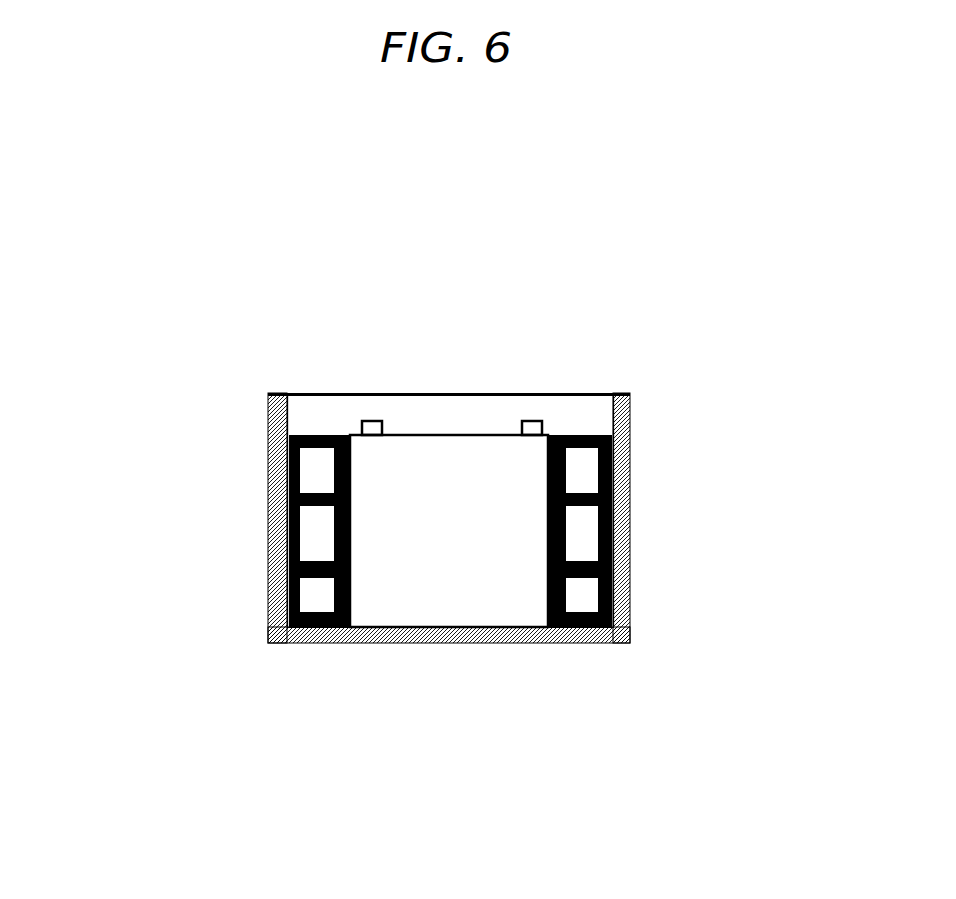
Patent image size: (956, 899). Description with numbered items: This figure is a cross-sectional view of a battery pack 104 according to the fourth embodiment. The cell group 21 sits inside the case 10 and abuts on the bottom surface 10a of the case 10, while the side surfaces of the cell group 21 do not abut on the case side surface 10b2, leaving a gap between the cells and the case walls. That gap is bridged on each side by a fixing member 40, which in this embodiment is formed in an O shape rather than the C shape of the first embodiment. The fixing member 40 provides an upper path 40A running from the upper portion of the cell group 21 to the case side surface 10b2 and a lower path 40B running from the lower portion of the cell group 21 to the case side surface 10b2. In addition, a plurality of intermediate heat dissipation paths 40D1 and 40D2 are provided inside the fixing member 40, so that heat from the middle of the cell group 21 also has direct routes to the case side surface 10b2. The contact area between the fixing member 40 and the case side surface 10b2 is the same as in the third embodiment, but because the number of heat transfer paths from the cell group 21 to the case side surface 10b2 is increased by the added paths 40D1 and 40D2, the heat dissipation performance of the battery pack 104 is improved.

The battery pack 104 is at (190, 197).
The case 10 is at (268, 423).
The bottom surface of the case 10a is at (490, 643).
The case side surface 10b2 is at (265, 548).
The cell group 21 is at (527, 465).
The fixing member 40 is at (632, 474).
The upper path 40A is at (630, 412).
The lower path 40B is at (605, 643).
The intermediate heat dissipation path 40D1 is at (632, 507).
The intermediate heat dissipation path 40D2 is at (632, 583).